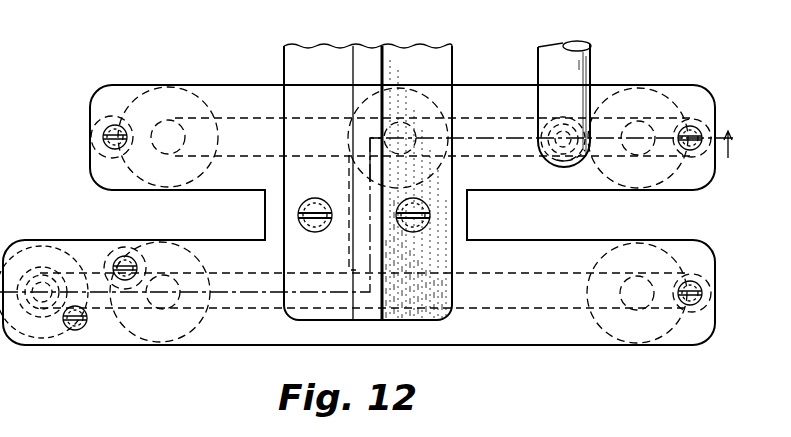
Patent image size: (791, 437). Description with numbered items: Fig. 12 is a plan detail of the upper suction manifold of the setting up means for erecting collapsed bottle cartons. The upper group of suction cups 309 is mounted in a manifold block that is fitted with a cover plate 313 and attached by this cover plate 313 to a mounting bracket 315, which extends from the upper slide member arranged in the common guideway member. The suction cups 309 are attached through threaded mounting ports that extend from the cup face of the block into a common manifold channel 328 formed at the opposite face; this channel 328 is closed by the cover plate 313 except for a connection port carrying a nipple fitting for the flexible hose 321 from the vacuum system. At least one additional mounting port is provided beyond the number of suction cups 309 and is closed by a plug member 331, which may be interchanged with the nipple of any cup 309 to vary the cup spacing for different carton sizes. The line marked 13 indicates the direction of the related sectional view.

The cover plate 313 is at (245, 337).
The mounting bracket 315 is at (294, 64).
The flexible hose 321 is at (585, 62).
The plug member 331 is at (35, 338).
The upper group of suction cups 309 is at (132, 173).
The common manifold channel 328 is at (510, 310).
The view direction arrow 13 is at (731, 152).